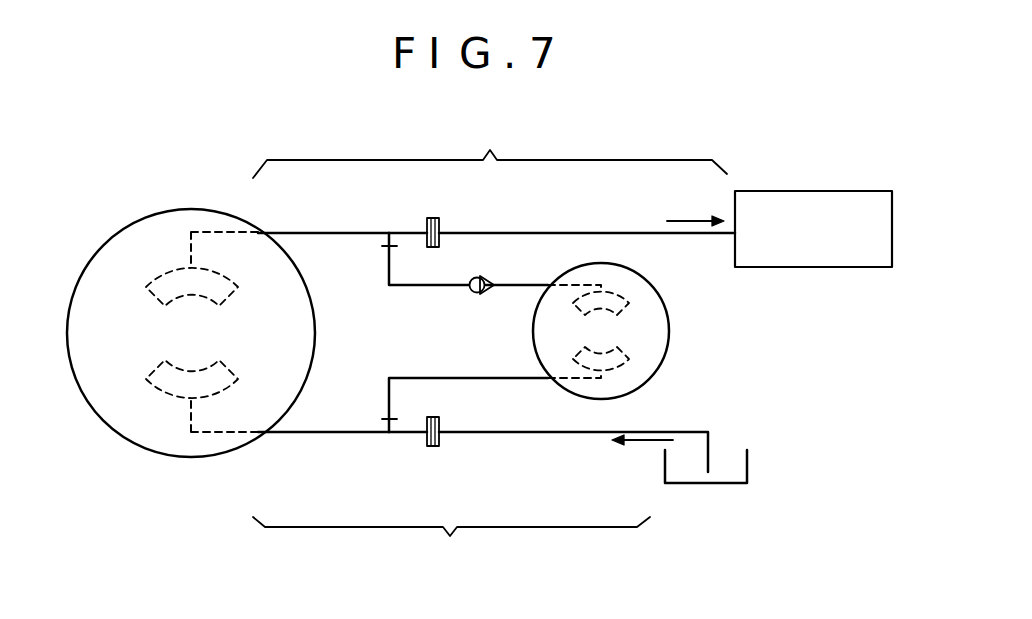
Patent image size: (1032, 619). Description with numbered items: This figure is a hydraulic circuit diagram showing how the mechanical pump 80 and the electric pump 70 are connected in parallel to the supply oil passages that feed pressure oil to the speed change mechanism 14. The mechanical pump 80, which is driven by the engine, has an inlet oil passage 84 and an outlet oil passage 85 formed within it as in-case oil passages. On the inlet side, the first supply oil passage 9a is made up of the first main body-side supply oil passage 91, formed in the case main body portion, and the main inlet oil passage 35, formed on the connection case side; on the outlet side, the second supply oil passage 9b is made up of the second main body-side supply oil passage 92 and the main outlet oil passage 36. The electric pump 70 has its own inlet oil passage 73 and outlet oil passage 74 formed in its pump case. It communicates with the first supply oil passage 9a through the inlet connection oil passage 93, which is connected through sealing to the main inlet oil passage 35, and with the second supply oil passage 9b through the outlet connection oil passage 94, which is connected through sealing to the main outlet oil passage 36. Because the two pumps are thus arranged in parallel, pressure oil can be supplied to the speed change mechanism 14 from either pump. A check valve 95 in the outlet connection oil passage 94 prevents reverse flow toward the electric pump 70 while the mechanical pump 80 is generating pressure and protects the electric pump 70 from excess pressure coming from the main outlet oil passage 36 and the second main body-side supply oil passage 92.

The speed change mechanism 14 is at (797, 191).
The main inlet oil passage 35 is at (357, 433).
The main outlet oil passage 36 is at (340, 233).
The electric pump 70 is at (669, 325).
The inlet oil passage 73 is at (620, 393).
The outlet oil passage 74 is at (618, 266).
The mechanical pump 80 is at (95, 252).
The inlet oil passage 84 is at (203, 435).
The outlet oil passage 85 is at (190, 232).
The first main body-side supply oil passage 91 is at (490, 433).
The second main body-side supply oil passage 92 is at (508, 232).
The inlet connection oil passage 93 is at (452, 377).
The outlet connection oil passage 94 is at (450, 287).
The check valve 95 is at (482, 274).
The first supply oil passage 9a is at (451, 545).
The second supply oil passage 9b is at (490, 150).